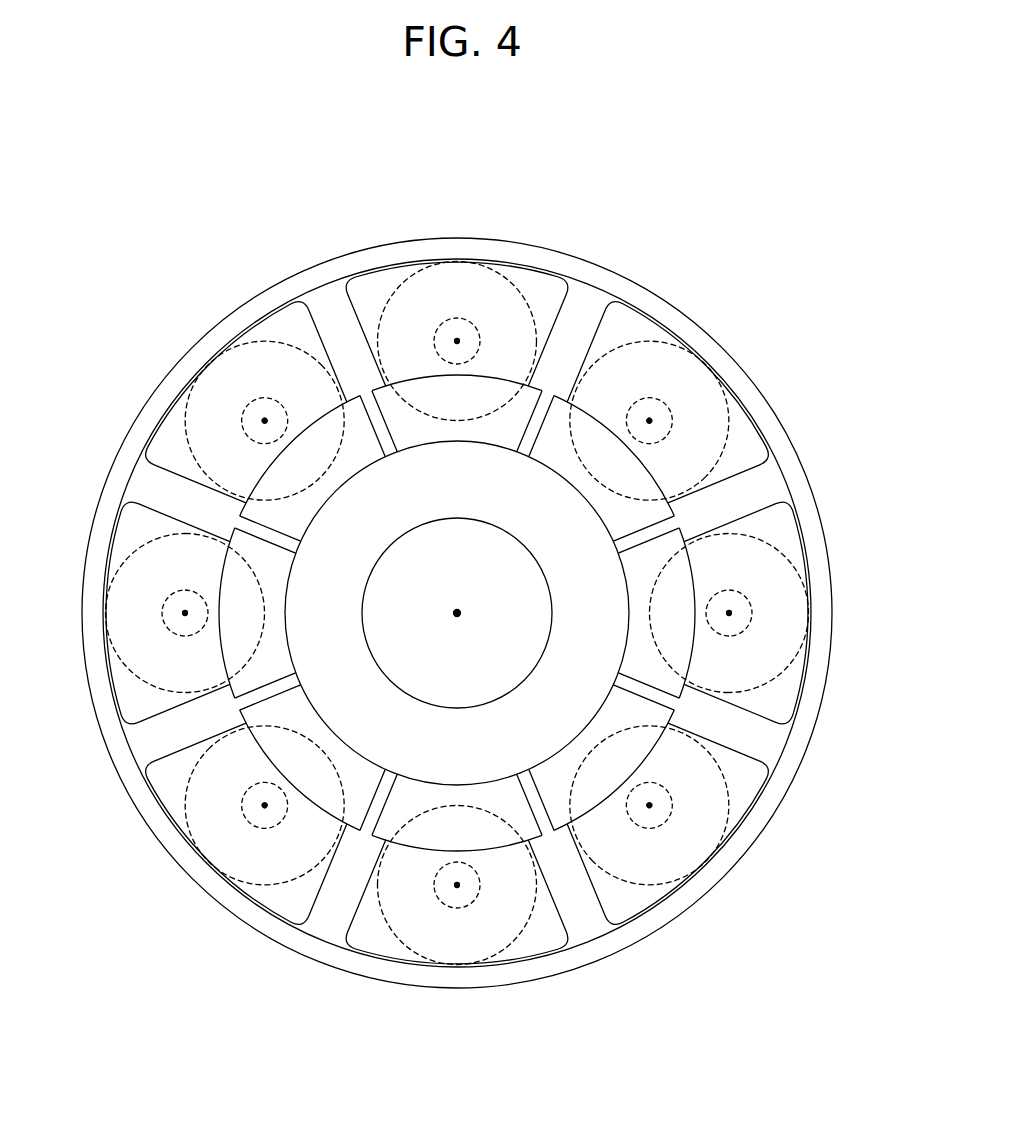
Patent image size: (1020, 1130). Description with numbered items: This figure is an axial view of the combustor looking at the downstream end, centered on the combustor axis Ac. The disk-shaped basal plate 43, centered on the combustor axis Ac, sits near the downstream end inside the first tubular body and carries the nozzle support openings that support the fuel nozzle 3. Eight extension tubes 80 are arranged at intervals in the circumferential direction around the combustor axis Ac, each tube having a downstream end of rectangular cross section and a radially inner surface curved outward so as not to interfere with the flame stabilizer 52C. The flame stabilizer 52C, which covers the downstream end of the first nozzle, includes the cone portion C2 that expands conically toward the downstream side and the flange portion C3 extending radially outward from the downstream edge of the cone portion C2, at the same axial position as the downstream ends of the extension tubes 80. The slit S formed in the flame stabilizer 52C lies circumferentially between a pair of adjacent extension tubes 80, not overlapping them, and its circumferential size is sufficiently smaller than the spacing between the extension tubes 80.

The stator 3 is at (636, 155).
The basal plate 43 is at (742, 335).
The extension tube 80 is at (532, 266).
The slit S is at (458, 616).
The flame stabilizer 52C is at (508, 723).
The cone portion C2 is at (585, 623).
The flange portion C3 is at (590, 797).
The combustor axis Ac is at (457, 613).